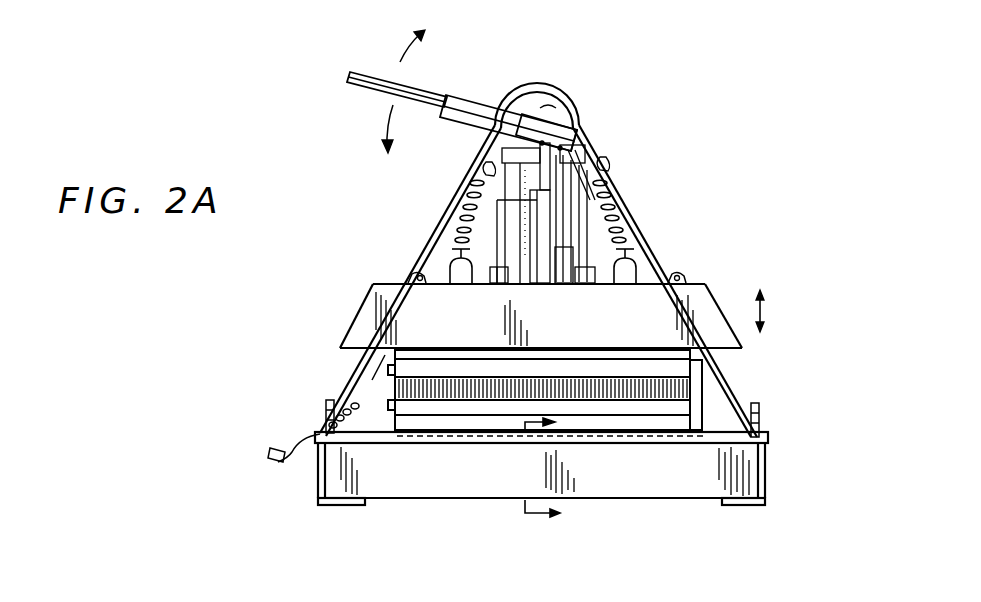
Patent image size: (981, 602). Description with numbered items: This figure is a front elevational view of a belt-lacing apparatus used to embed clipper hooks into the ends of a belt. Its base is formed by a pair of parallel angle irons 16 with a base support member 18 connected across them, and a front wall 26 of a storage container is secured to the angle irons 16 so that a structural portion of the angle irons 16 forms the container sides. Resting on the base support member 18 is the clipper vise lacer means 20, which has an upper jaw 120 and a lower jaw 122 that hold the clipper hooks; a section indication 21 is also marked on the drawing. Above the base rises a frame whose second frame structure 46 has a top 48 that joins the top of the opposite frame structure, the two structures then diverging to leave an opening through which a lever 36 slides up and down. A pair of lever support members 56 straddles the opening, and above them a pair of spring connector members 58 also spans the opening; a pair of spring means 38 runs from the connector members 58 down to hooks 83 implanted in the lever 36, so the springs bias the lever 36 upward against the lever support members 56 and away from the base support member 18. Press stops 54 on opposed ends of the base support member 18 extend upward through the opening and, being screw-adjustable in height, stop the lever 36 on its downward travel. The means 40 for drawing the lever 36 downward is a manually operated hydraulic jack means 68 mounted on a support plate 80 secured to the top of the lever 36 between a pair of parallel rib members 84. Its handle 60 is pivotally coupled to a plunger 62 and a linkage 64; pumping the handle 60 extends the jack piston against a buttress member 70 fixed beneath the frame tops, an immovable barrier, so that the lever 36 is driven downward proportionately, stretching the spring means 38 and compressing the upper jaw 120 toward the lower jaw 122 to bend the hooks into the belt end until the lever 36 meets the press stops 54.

The angle irons 16 is at (542, 495).
The base support member 18 is at (345, 360).
The clipper vise lacer means 20 is at (600, 390).
The section line 21 is at (535, 425).
The front wall 26 is at (662, 475).
The lever 36 is at (590, 329).
The spring means 38 is at (545, 200).
The means for drawing the lever downwardly 40 is at (612, 127).
The second frame structure 46 is at (660, 249).
The top of second frame structure 48 is at (550, 90).
The press stops 54 is at (531, 431).
The lever support members 56 is at (725, 271).
The spring connector members 58 is at (485, 165).
The handle 60 is at (462, 89).
The plunger 62 is at (565, 127).
The linkage 64 is at (598, 185).
The hydraulic jack means 68 is at (510, 215).
The buttress member 70 is at (585, 89).
The support plate 80 is at (428, 283).
The hooks 83 is at (470, 284).
The rib members 84 is at (500, 285).
The upper jaw 120 is at (704, 348).
The lower jaw 122 is at (598, 408).